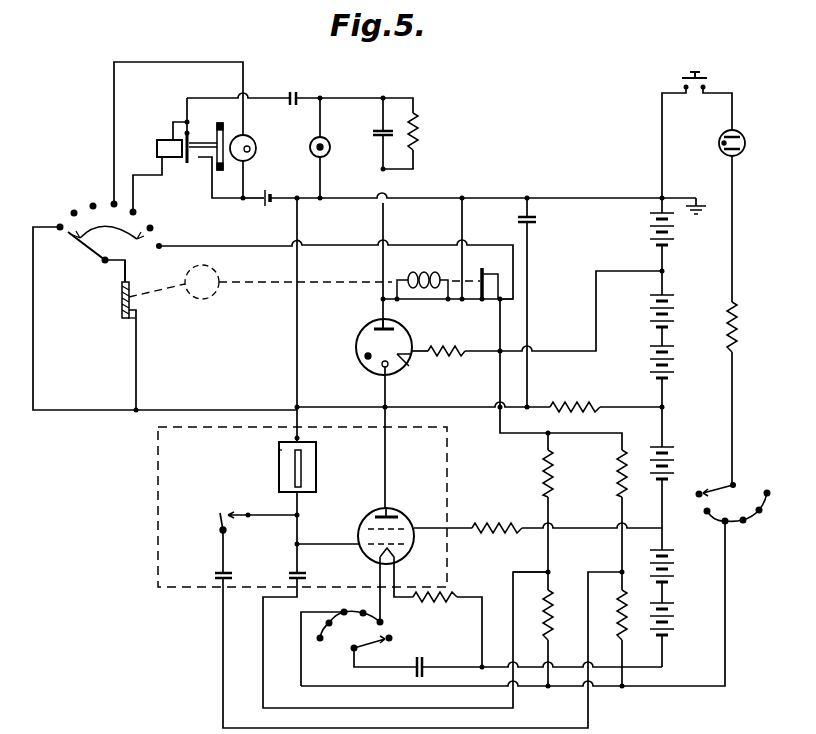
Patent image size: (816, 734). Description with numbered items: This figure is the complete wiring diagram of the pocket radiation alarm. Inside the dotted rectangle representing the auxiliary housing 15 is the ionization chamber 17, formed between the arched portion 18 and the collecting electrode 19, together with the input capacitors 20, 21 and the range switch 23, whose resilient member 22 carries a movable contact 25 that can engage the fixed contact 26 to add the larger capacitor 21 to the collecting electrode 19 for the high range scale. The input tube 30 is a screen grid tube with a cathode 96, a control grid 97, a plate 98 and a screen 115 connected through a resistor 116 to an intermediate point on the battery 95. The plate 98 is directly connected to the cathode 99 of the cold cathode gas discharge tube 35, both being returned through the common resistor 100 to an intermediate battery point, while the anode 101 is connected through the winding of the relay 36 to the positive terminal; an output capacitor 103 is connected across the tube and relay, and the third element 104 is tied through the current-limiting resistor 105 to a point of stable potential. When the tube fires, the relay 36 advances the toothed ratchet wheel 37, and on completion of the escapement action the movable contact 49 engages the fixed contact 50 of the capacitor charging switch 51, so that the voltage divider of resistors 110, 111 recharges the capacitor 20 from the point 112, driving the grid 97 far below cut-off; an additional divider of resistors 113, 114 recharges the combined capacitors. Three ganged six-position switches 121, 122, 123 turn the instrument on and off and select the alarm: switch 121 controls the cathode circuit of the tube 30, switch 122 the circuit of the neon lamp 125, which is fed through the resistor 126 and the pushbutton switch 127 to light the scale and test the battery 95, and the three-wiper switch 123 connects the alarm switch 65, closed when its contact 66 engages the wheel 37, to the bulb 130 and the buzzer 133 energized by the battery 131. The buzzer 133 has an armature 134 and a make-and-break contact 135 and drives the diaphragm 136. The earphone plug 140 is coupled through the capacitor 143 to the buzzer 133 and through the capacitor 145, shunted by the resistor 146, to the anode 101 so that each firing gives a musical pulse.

The auxiliary housing 15 is at (147, 571).
The ionization chamber 17 is at (316, 452).
The arched portion 18 is at (279, 452).
The collecting electrode 19 is at (302, 470).
The input capacitor 20 is at (289, 575).
The input capacitor 21 is at (214, 575).
The resilient member 22 is at (243, 518).
The range switch 23 is at (213, 492).
The movable contact 25 is at (231, 507).
The fixed contact 26 is at (220, 531).
The input tube 30 is at (360, 520).
The cold cathode gas discharge tube 35 is at (356, 346).
The relay 36 is at (430, 272).
The toothed ratchet wheel 37 is at (120, 303).
The movable contact 49 is at (496, 276).
The fixed contact 50 is at (482, 266).
The capacitor charging switch 51 is at (488, 308).
The alarm switch 65 is at (112, 326).
The contact 66 is at (131, 313).
The battery 95 is at (677, 298).
The cathode 96 is at (397, 552).
The control grid 97 is at (370, 547).
The plate 98 is at (394, 511).
The cathode 99 is at (375, 371).
The resistor 100 is at (575, 401).
The anode 101 is at (372, 327).
The output capacitor 103 is at (537, 221).
The third element 104 is at (405, 366).
The current-limiting resistor 105 is at (462, 358).
The resistor 110 is at (542, 470).
The resistor 111 is at (548, 618).
The point 112 is at (547, 570).
The resistor 113 is at (617, 480).
The resistor 114 is at (622, 618).
The screen 115 is at (404, 527).
The resistor 116 is at (508, 512).
The six-position switch 121 is at (334, 653).
The six-position switch 122 is at (716, 470).
The six-position three-wiper switch 123 is at (84, 262).
The neon lamp 125 is at (719, 137).
The resistor 126 is at (725, 348).
The pushbutton switch 127 is at (682, 84).
The electric bulb 130 is at (252, 136).
The battery 131 is at (266, 190).
The buzzer 133 is at (163, 140).
The armature 134 is at (186, 163).
The make-and-break contact 135 is at (204, 168).
The diaphragm 136 is at (215, 134).
The plug 140 is at (327, 140).
The capacitor 143 is at (295, 91).
The capacitor 145 is at (374, 137).
The resistor 146 is at (420, 130).